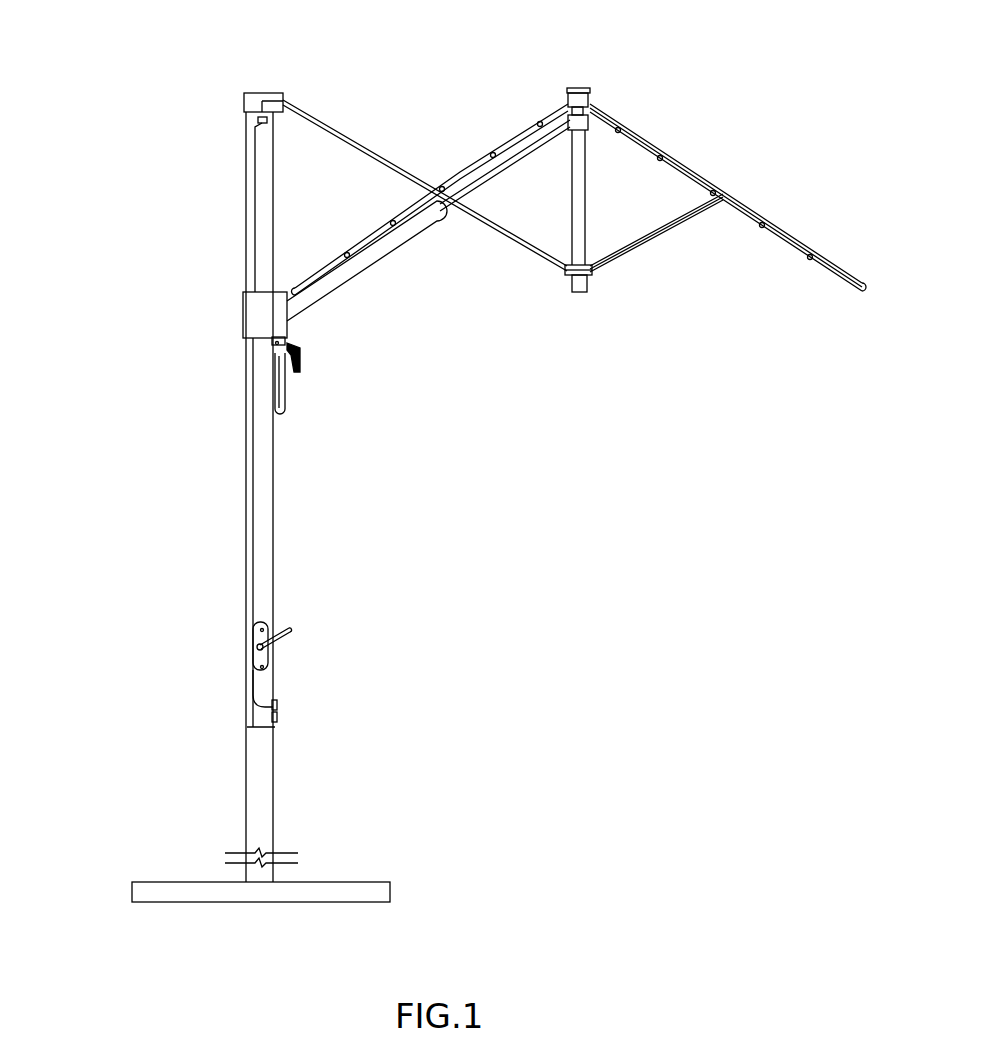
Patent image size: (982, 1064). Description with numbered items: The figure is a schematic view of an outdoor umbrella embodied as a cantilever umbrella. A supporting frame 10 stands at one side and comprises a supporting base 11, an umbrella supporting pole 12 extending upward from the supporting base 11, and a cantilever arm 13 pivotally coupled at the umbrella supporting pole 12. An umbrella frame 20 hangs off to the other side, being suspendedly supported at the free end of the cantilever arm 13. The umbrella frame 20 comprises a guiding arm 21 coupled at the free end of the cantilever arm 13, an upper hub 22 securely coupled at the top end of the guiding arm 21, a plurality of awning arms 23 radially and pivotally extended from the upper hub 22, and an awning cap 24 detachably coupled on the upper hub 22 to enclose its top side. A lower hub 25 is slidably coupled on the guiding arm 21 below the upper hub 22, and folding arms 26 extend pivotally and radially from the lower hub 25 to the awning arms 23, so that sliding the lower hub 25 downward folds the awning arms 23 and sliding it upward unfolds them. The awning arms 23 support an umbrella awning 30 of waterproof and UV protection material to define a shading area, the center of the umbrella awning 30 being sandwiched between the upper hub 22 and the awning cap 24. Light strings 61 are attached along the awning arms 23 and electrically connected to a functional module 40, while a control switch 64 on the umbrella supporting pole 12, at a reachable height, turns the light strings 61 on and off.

The supporting frame 10 is at (133, 510).
The supporting base 11 is at (345, 887).
The umbrella supporting pole 12 is at (263, 555).
The cantilever arm 13 is at (330, 283).
The umbrella frame 20 is at (648, 380).
The guiding arm 21 is at (580, 215).
The upper hub 22 is at (614, 121).
The awning arms 23 is at (752, 216).
The awning cap 24 is at (588, 100).
The lower hub 25 is at (572, 278).
The folding arms 26 is at (508, 243).
The umbrella awning 30 is at (741, 201).
The functional module 40 is at (566, 93).
The light strings 61 is at (350, 258).
The control switch 64 is at (277, 700).